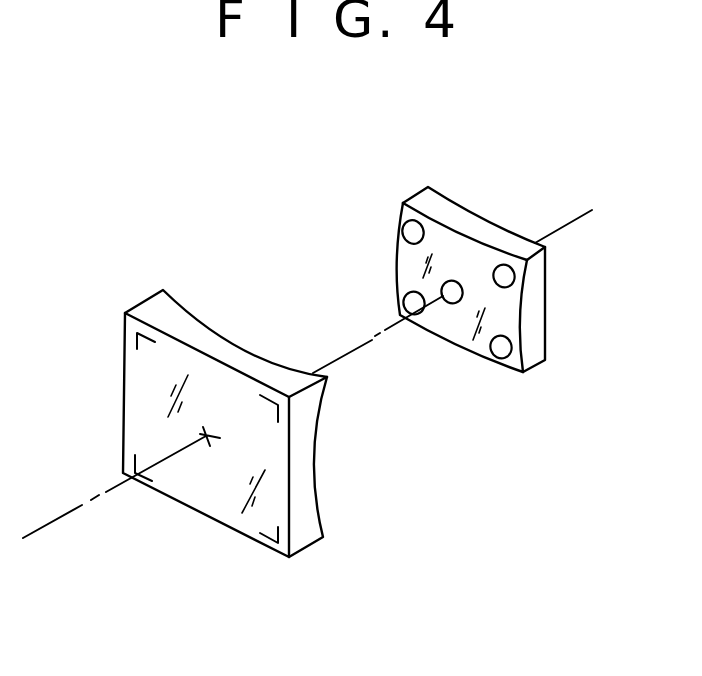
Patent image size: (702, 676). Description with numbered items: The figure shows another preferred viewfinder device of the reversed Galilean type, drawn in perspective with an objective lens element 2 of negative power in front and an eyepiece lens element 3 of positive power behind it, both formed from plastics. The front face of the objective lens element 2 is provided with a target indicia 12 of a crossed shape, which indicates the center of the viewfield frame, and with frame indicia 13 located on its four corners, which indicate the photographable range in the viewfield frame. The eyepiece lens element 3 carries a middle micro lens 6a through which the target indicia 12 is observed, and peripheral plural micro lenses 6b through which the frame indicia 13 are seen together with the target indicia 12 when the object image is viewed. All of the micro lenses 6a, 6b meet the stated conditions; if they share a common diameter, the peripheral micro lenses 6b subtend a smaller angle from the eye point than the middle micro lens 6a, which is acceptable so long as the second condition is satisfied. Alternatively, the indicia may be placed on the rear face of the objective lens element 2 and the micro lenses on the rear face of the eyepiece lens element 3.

The objective lens element 2 is at (308, 538).
The eyepiece lens element 3 is at (542, 318).
The middle micro lens 6a is at (458, 283).
The peripheral micro lenses 6b is at (407, 291).
The target indicia 12 is at (206, 440).
The frame indicia 13 is at (138, 335).